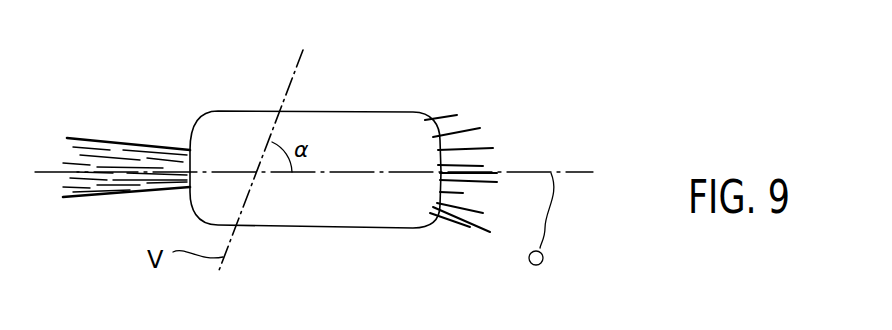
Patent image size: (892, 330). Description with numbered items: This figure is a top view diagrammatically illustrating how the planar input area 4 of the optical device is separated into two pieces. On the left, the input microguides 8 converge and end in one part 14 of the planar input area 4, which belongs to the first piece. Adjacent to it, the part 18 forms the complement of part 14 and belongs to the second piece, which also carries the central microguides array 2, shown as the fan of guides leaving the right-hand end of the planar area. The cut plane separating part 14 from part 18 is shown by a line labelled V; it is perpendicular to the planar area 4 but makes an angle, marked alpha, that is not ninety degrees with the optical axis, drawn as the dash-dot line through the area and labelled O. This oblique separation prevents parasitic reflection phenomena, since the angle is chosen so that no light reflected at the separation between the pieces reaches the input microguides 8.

The central microguides array 2 is at (462, 128).
The planar input area 4 is at (310, 233).
The input microguides 8 is at (117, 150).
The part of the planar input area 14 is at (230, 130).
The complementary part of the planar input area 18 is at (385, 142).